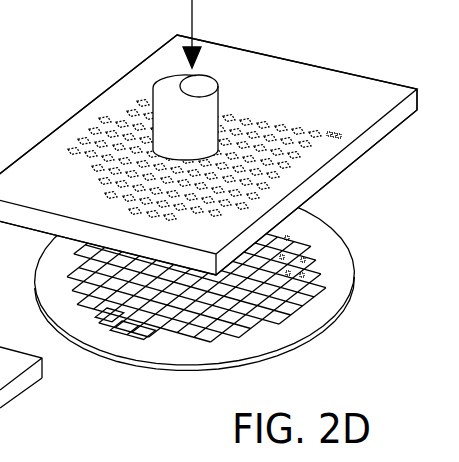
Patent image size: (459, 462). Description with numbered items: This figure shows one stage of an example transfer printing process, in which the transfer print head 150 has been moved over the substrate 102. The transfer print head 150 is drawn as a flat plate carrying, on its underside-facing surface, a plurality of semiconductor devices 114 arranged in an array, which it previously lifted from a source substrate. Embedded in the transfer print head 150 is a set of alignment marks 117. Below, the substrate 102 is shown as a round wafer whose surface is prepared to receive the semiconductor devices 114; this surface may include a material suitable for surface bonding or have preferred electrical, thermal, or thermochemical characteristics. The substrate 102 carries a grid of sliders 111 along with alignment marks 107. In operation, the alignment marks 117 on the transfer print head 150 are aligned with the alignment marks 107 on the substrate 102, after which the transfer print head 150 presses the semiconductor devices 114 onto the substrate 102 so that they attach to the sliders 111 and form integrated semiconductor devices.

The substrate 102 is at (297, 345).
The alignment marks 107 is at (305, 255).
The sliders 111 is at (145, 335).
The semiconductor devices 114 is at (282, 120).
The alignment marks 117 is at (334, 132).
The transfer print head 150 is at (317, 66).